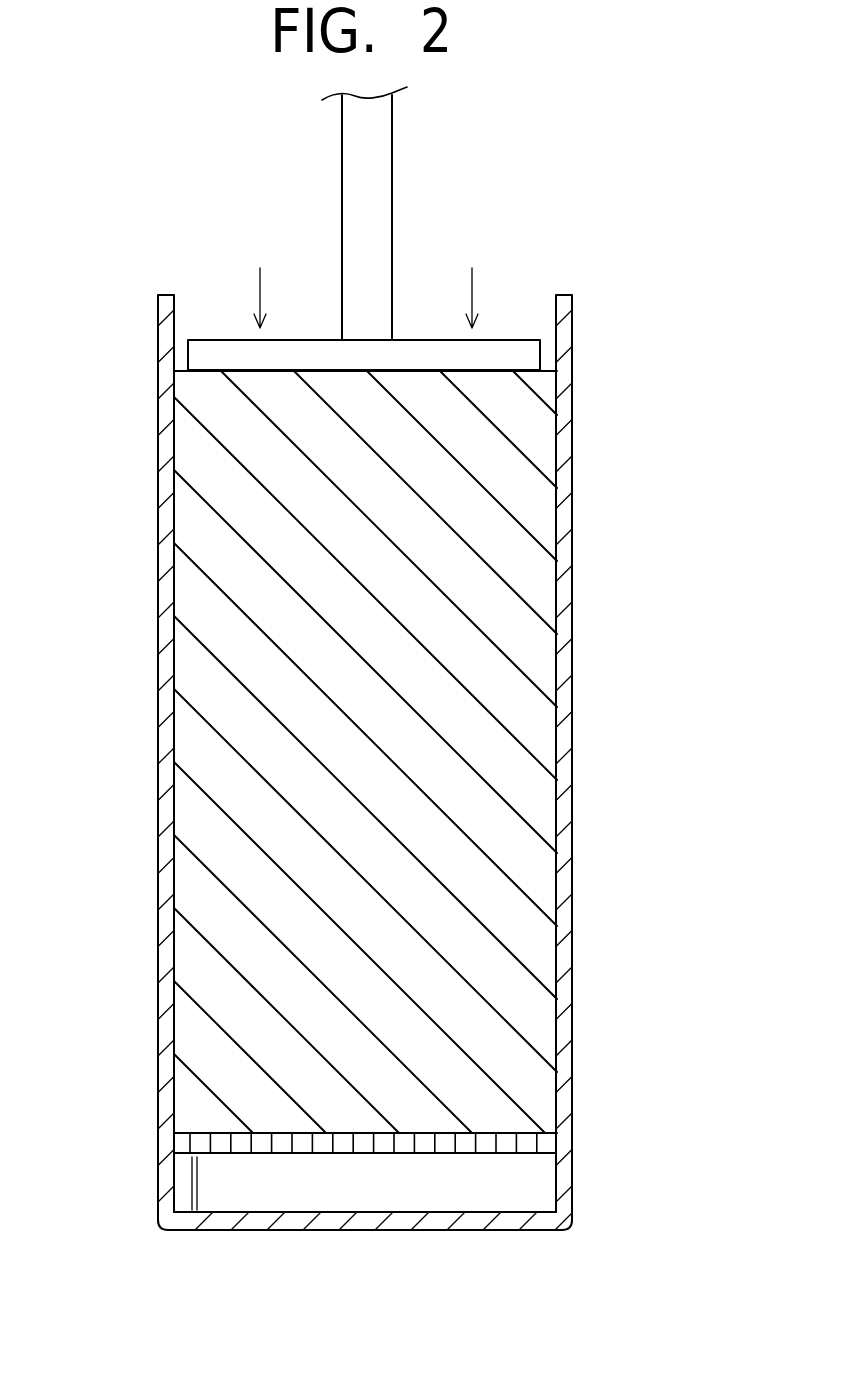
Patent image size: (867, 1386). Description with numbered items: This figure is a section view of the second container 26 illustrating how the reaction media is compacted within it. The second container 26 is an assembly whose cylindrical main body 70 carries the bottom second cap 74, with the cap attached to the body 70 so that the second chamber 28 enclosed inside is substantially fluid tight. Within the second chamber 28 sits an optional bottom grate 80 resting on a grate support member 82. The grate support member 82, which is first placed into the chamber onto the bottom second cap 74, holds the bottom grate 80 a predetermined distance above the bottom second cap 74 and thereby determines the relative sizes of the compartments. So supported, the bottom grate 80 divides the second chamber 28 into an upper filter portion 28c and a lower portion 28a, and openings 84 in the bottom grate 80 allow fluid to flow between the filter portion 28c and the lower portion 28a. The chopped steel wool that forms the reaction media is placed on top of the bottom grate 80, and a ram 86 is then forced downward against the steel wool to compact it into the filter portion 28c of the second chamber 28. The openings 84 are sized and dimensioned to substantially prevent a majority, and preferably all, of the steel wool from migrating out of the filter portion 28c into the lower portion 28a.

The second container 26 is at (439, 815).
The second chamber 28 is at (442, 752).
The lower portion 28a is at (263, 1187).
The filter portion 28c is at (497, 605).
The cylindrical body 70 is at (562, 650).
The bottom second cap 74 is at (368, 1222).
The bottom grate 80 is at (348, 1170).
The grate support member 82 is at (187, 1185).
The openings 84 is at (503, 1142).
The ram 86 is at (412, 315).